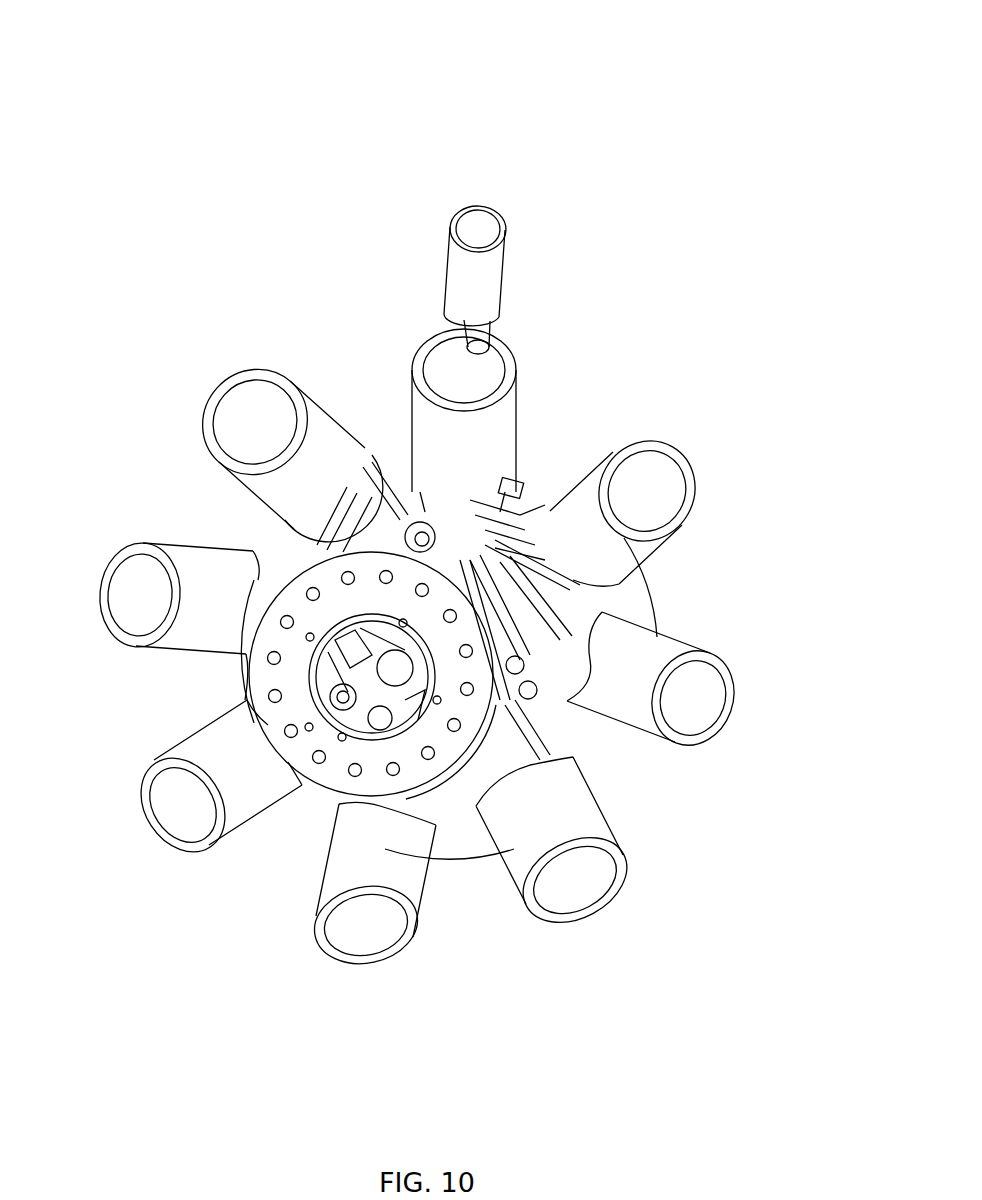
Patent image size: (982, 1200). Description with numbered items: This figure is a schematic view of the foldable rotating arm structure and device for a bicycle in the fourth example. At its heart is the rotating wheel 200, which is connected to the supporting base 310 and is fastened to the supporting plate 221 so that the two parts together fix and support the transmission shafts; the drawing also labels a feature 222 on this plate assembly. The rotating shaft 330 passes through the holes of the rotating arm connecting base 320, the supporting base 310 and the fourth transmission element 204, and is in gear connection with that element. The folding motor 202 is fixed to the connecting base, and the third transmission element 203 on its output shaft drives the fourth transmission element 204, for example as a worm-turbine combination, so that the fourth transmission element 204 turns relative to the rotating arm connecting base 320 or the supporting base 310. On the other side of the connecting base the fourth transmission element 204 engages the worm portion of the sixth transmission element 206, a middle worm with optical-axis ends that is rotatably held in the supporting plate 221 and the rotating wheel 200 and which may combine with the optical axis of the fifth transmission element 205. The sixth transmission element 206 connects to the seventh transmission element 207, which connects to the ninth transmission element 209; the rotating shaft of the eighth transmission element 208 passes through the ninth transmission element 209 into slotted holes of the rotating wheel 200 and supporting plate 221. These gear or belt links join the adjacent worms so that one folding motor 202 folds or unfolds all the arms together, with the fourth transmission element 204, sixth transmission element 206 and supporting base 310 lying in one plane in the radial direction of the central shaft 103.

The central shaft 103 is at (385, 672).
The rotating wheel 200 is at (633, 610).
The folding motor 202 is at (482, 260).
The third transmission element 203 is at (480, 344).
The fourth transmission element 204 is at (453, 507).
The fifth transmission element 205 is at (447, 510).
The sixth transmission element 206 is at (457, 508).
The seventh transmission element 207 is at (463, 537).
The eighth transmission element 208 is at (460, 540).
The ninth transmission element 209 is at (500, 542).
The supporting plate 221 is at (377, 757).
The bolt holes 222 is at (432, 713).
The supporting base 310 is at (477, 522).
The rotating arm connecting base 320 is at (427, 425).
The rotating shaft 330 is at (507, 508).